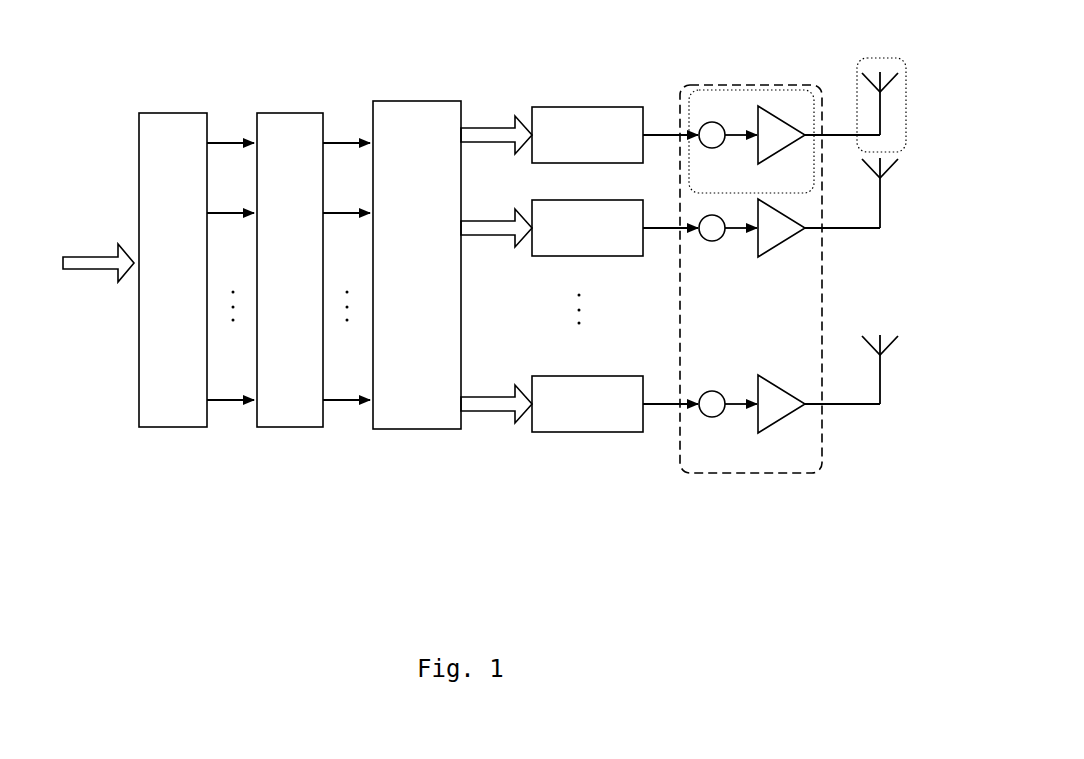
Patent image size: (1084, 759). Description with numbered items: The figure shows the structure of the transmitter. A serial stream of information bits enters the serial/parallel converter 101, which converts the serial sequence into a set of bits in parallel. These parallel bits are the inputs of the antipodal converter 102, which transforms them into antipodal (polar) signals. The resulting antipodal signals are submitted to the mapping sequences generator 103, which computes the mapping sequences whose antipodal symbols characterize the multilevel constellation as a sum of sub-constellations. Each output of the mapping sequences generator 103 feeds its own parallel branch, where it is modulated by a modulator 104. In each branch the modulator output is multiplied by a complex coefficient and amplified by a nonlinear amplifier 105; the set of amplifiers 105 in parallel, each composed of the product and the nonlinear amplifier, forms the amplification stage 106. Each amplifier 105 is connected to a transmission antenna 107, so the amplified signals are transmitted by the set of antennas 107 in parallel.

The serial/parallel converter 101 is at (170, 113).
The antipodal converter 102 is at (298, 113).
The mapping sequences generator 103 is at (407, 101).
The modulator 104 is at (588, 107).
The amplifier 105 is at (793, 88).
The amplification stage 106 is at (751, 274).
The antenna 107 is at (905, 103).